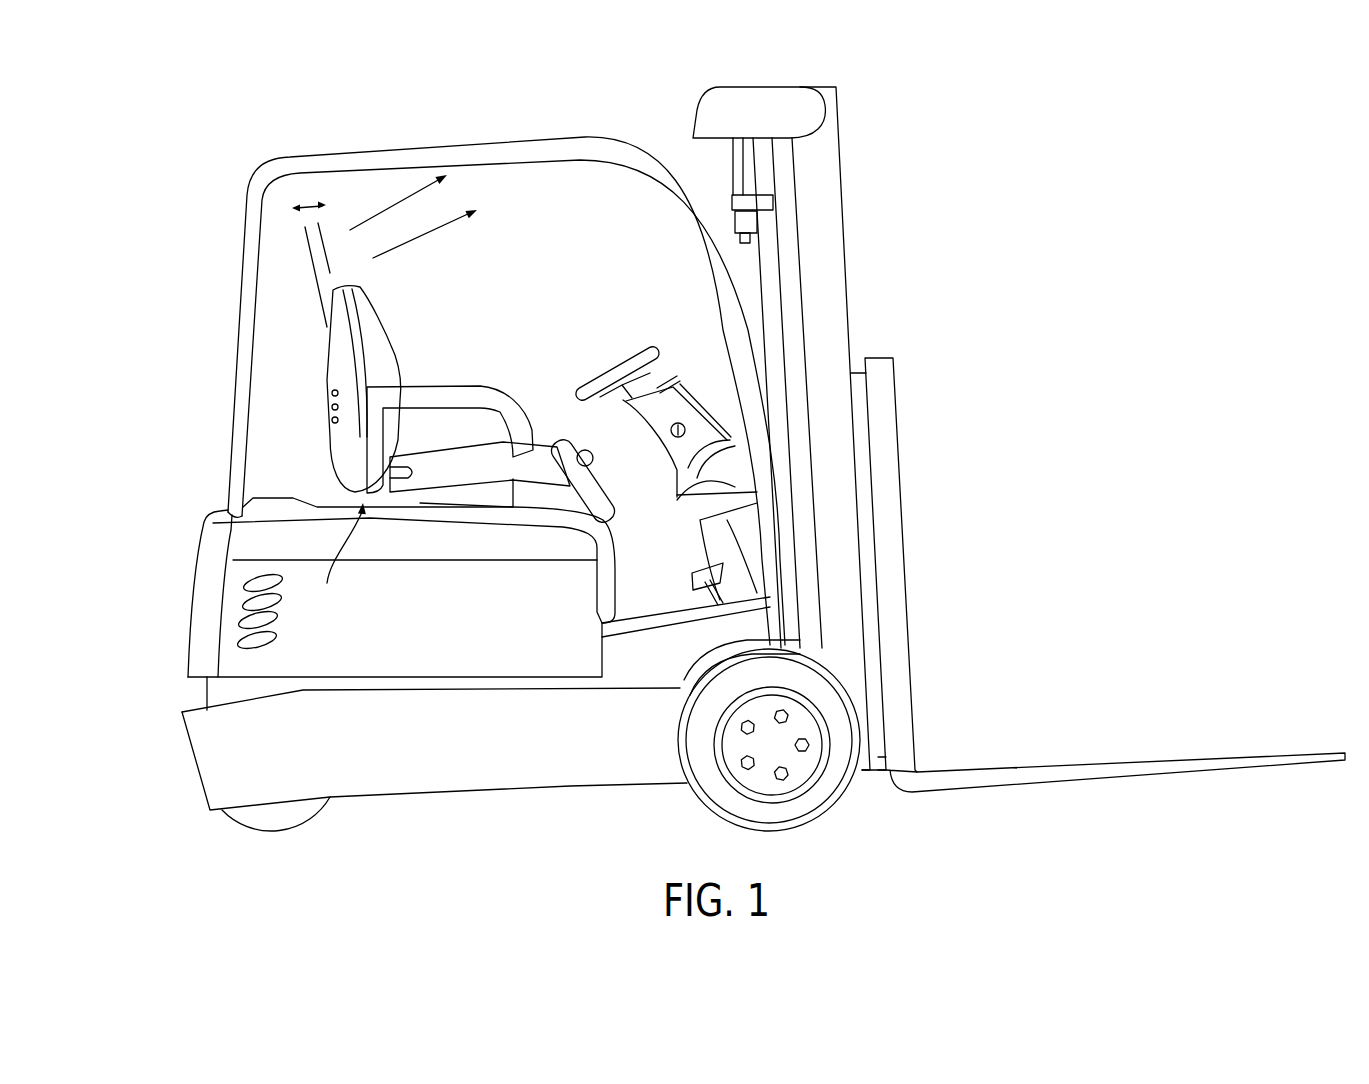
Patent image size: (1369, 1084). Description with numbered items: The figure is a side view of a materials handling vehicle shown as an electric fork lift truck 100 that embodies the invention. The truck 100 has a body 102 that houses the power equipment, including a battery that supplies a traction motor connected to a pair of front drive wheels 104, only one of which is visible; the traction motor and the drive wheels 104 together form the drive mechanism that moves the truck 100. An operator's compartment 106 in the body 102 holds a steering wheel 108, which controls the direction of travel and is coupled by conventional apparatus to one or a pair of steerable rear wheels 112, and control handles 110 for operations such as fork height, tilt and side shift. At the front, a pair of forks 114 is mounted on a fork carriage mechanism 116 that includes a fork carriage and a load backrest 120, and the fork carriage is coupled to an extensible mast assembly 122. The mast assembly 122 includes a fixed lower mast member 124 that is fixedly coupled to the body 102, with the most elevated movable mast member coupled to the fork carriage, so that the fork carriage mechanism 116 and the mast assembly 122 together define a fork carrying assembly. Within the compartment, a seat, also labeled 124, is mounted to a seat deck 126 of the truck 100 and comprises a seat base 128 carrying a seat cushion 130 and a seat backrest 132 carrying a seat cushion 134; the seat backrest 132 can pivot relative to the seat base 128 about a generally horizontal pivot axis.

The lift truck 100 is at (1011, 294).
The body 102 is at (158, 650).
The front drive wheels 104 is at (785, 815).
The operator's compartment 106 is at (490, 264).
The steering wheel 108 is at (622, 362).
The control handles 110 is at (604, 453).
The steerable rear wheels 112 is at (283, 830).
The forks 114 is at (1090, 763).
The fork carriage mechanism 116 is at (964, 530).
The load backrest 120 is at (893, 443).
The mast assembly 122 is at (888, 234).
The lower mast member 124 is at (278, 427).
The seat deck 126 is at (478, 550).
The seat base 128 is at (442, 512).
The seat cushion 130 is at (547, 450).
The seat backrest 132 is at (295, 352).
The seat cushion 134 is at (368, 318).